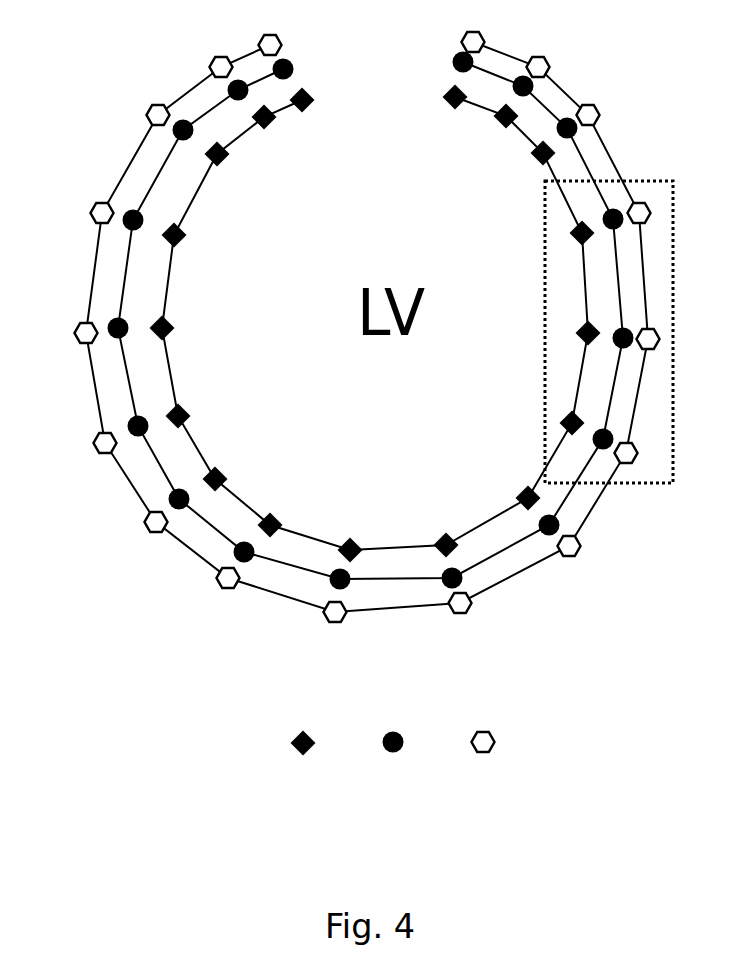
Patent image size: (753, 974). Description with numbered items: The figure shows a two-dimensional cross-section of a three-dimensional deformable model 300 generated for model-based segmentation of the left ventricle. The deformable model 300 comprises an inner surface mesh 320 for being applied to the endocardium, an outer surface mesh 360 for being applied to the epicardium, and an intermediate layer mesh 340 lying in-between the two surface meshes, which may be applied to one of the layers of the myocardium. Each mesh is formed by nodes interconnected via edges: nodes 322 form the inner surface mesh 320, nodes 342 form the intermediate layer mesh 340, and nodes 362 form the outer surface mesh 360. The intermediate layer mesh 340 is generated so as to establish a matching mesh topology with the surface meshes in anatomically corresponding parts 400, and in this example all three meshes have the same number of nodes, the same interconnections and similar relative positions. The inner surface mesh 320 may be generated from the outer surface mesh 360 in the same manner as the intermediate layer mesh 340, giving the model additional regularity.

The deformable model 300 is at (106, 67).
The inner surface mesh 320 is at (400, 548).
The intermediate layer mesh 340 is at (388, 587).
The outer surface mesh 360 is at (423, 612).
The nodes of the inner surface mesh 322 is at (302, 758).
The nodes of the intermediate layer mesh 342 is at (393, 757).
The nodes of the outer surface mesh 362 is at (483, 757).
The anatomically corresponding parts 400 is at (650, 180).